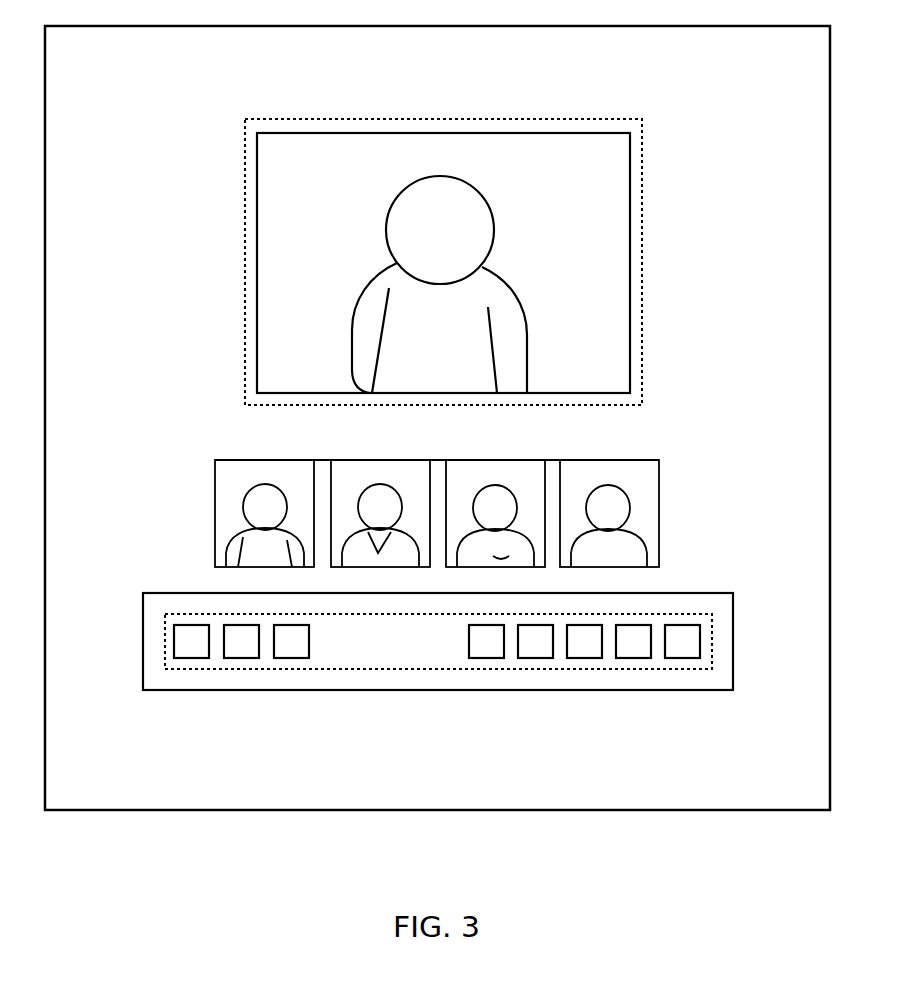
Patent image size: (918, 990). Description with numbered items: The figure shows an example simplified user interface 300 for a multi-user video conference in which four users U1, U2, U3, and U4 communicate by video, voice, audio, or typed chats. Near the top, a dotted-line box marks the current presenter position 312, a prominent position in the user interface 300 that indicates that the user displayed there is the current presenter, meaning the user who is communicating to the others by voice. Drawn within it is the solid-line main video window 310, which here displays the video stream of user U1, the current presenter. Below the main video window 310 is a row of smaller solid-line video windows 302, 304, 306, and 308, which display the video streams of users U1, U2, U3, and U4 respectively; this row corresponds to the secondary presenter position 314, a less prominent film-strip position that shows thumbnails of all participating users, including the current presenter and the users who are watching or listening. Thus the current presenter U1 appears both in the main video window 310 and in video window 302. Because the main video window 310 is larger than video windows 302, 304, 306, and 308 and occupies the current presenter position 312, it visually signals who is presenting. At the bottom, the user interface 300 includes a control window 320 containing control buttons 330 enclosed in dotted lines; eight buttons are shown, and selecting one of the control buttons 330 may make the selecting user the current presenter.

The user interface 300 is at (456, 870).
The main video window 310 is at (313, 133).
The current presenter position 312 is at (465, 120).
The video window 302 is at (224, 460).
The video window 304 is at (340, 460).
The video window 306 is at (455, 460).
The video window 308 is at (569, 460).
The secondary presenter position 314 is at (670, 442).
The control window 320 is at (151, 593).
The control buttons 330 is at (173, 669).
The user U1 is at (490, 209).
The user U2 is at (400, 505).
The user U3 is at (514, 505).
The user U4 is at (628, 505).